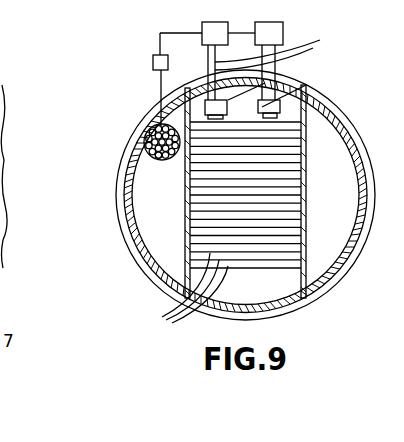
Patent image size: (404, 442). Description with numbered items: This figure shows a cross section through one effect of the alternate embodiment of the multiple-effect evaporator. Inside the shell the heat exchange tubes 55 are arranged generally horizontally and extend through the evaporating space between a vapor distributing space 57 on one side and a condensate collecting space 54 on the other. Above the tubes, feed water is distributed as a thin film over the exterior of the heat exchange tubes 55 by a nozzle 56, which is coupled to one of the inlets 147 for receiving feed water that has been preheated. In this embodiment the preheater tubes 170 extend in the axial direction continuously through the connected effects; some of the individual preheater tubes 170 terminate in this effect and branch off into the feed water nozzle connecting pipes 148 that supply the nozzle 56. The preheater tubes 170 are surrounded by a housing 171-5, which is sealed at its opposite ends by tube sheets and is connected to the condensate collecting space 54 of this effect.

The condensate collecting space 54 is at (170, 208).
The heat exchange tubes 55 is at (163, 317).
The nozzle 56 is at (240, 105).
The vapor distributing space 57 is at (348, 208).
The inlets 147 is at (276, 70).
The feed water nozzle connecting pipes 148 is at (153, 80).
The preheater tubes 170 is at (149, 146).
The housing 171-5 is at (152, 158).